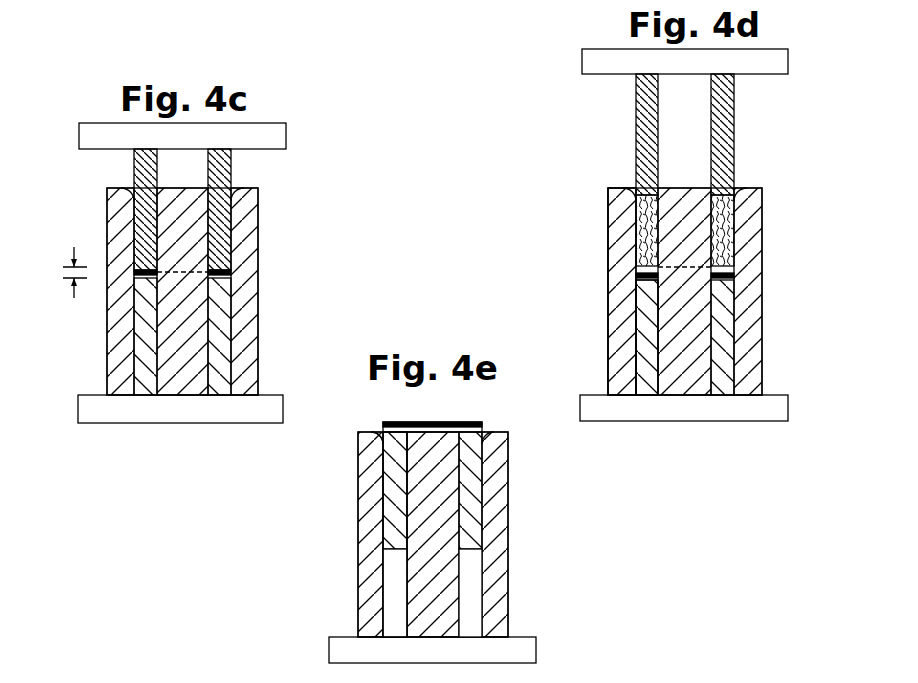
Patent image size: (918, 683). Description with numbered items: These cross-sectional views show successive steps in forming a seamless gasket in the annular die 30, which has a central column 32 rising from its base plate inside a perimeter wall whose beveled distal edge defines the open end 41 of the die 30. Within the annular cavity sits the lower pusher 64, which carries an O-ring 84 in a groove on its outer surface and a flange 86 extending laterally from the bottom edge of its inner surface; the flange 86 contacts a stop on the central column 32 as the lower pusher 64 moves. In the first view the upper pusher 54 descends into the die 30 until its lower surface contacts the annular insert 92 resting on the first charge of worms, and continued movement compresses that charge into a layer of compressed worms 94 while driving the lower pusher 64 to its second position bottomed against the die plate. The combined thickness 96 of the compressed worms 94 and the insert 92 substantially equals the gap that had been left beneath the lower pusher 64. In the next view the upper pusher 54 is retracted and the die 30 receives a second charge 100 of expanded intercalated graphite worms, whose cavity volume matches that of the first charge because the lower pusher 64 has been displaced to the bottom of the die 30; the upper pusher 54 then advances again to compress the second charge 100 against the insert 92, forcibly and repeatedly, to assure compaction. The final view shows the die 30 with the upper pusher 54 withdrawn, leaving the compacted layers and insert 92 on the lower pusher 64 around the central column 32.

In FIG. 4C, the annular die 30 is at (291, 278).
In FIG. 4D, the annular die 30 is at (767, 210).
In FIG. 4E, the annular die 30 is at (537, 562).
In FIG. 4E, the central column 32 is at (467, 598).
In FIG. 4E, the open end 41 is at (377, 430).
In FIG. 4C, the upper pusher 54 is at (192, 172).
In FIG. 4D, the upper pusher 54 is at (687, 107).
In FIG. 4C, the lower pusher 64 is at (218, 380).
In FIG. 4D, the lower pusher 64 is at (723, 337).
In FIG. 4E, the lower pusher 64 is at (493, 493).
In FIG. 4D, the O-ring 84 is at (631, 346).
In FIG. 4D, the flange 86 is at (643, 388).
In FIG. 4E, the flange 86 is at (407, 525).
In FIG. 4C, the annular insert 92 is at (192, 271).
In FIG. 4D, the annular insert 92 is at (737, 264).
In FIG. 4E, the annular insert 92 is at (450, 422).
In FIG. 4C, the compressed worms 94 is at (198, 278).
In FIG. 4D, the compressed worms 94 is at (735, 278).
In FIG. 4E, the compressed worms 94 is at (485, 428).
In FIG. 4C, the combined thickness 96 is at (53, 272).
In FIG. 4D, the second charge 100 is at (760, 190).